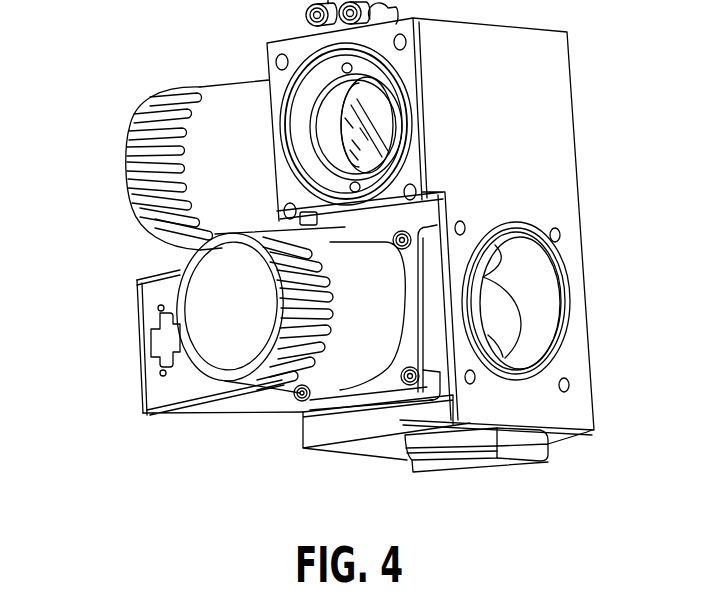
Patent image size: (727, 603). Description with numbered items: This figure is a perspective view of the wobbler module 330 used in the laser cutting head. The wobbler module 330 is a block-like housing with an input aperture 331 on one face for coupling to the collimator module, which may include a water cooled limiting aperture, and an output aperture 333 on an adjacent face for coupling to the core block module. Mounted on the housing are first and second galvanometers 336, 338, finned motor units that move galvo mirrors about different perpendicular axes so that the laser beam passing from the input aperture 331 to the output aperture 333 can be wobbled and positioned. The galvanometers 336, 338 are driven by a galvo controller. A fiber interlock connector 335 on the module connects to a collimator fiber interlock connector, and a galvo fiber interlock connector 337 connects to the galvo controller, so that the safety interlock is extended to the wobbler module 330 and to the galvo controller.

The wobbler module 330 is at (604, 108).
The input aperture 331 is at (386, 94).
The output aperture 333 is at (555, 298).
The fiber interlock connector 335 is at (300, 212).
The first galvanometer 336 is at (110, 164).
The galvo fiber interlock connector 337 is at (410, 468).
The second galvanometer 338 is at (207, 381).